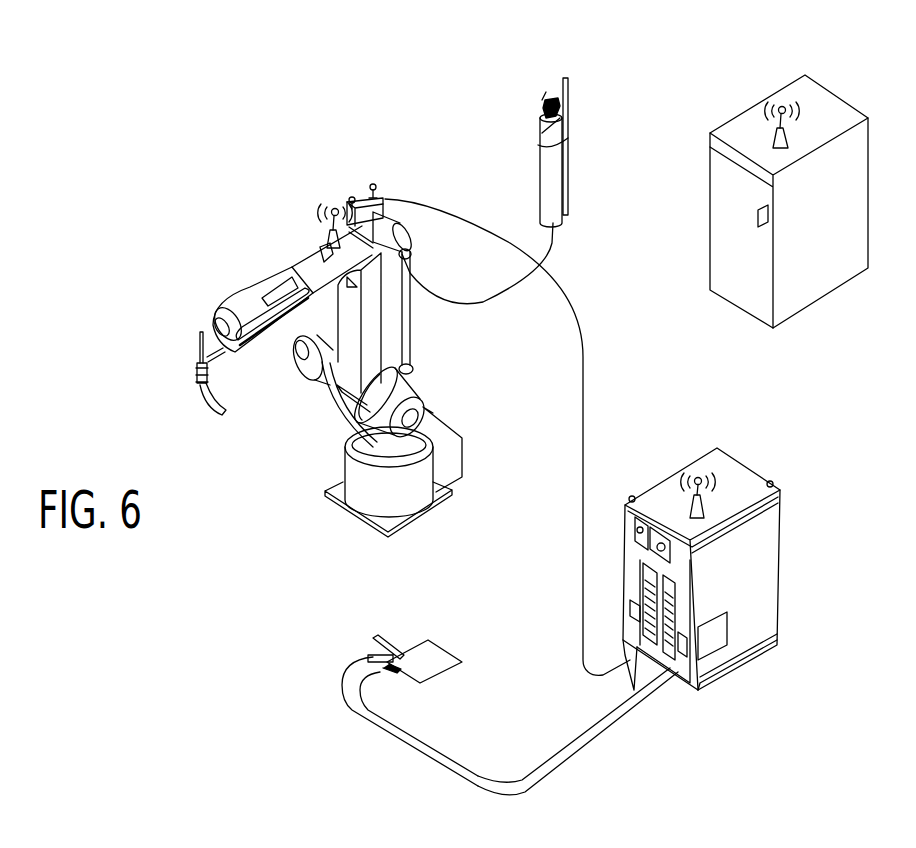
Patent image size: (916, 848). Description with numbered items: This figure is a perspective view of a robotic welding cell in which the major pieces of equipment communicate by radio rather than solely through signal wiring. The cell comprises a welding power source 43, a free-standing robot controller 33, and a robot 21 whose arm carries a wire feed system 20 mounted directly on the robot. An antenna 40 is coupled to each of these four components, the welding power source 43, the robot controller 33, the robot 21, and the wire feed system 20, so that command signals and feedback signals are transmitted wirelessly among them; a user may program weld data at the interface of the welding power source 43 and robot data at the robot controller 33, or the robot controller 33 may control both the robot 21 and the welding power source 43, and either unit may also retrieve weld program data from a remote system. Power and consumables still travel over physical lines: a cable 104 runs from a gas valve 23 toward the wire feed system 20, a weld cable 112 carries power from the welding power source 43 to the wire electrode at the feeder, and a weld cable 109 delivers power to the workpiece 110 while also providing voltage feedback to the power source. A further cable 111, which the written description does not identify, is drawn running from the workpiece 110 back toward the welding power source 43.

The wire feed system 20 is at (365, 198).
The robot 21 is at (263, 281).
The gas valve 23 is at (540, 167).
The robot controller 33 is at (710, 207).
The antenna 40 is at (332, 237).
The welding power source 43 is at (760, 572).
The cable 104 is at (552, 246).
The weld cable 109 is at (612, 737).
The workpiece 110 is at (445, 650).
The ground clamp cable 111 is at (418, 748).
The weld cable 112 is at (582, 460).